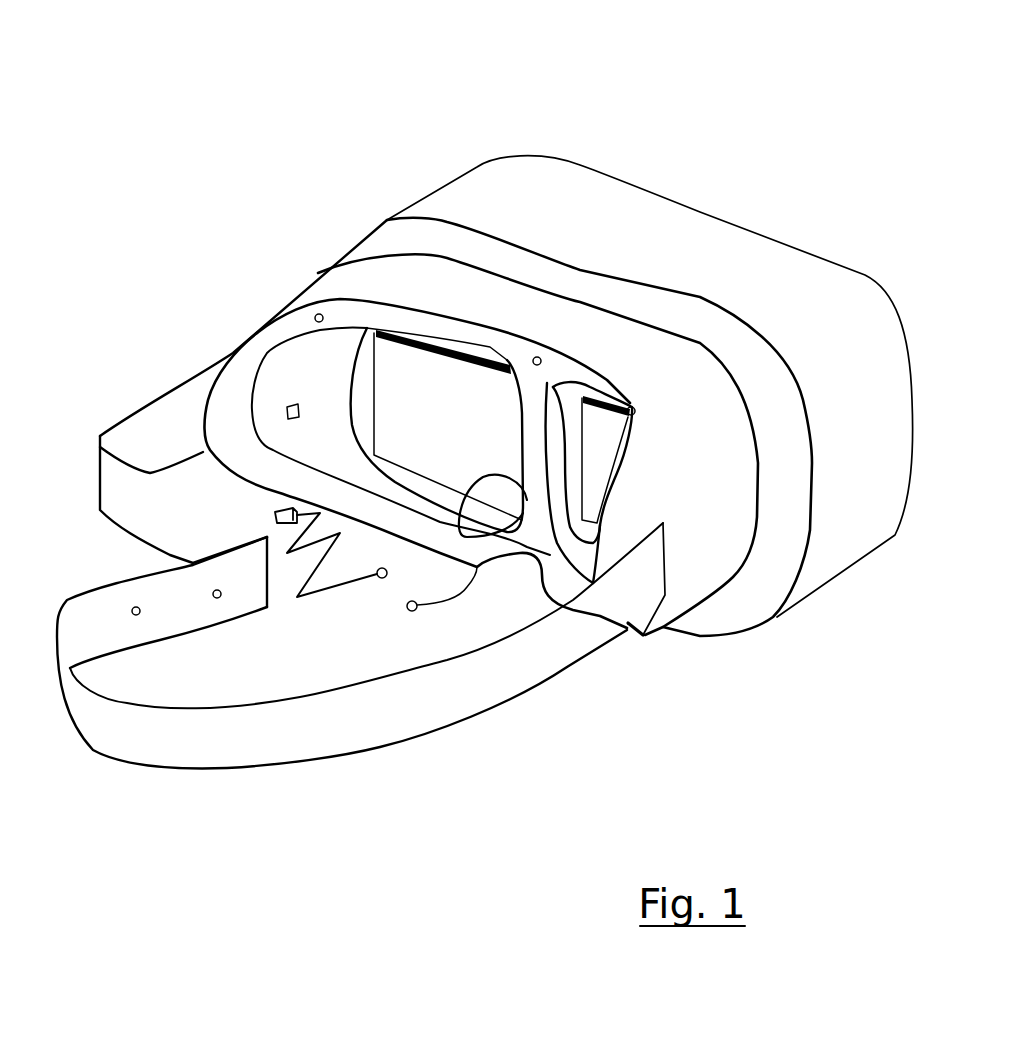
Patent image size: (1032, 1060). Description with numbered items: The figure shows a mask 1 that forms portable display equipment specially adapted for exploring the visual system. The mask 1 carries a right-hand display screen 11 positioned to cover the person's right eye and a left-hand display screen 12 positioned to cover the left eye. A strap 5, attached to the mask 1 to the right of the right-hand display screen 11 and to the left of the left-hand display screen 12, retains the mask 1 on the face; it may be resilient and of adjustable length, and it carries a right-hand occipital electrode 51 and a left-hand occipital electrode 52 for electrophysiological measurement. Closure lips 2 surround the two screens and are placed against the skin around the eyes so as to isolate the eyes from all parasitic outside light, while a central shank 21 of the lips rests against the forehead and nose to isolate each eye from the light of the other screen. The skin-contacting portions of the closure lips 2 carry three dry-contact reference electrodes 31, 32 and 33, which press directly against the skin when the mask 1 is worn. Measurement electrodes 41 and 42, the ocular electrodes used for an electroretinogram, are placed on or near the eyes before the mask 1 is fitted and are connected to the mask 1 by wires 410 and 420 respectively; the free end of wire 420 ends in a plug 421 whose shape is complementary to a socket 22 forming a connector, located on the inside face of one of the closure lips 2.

The mask 1 is at (354, 247).
The closure lips 2 is at (367, 297).
The right-hand display screen 11 is at (603, 460).
The left-hand display screen 12 is at (434, 396).
The central shank 21 is at (535, 440).
The socket 22 is at (283, 410).
The reference electrode 31 is at (314, 318).
The reference electrode 32 is at (537, 356).
The reference electrode 33 is at (636, 406).
The measurement electrode 41 is at (413, 611).
The measurement electrode 42 is at (382, 578).
The wire 410 is at (470, 580).
The wire 420 is at (300, 600).
The plug 421 is at (275, 509).
The strap 5 is at (237, 746).
The right-hand occipital electrode 51 is at (138, 615).
The left-hand occipital electrode 52 is at (219, 599).